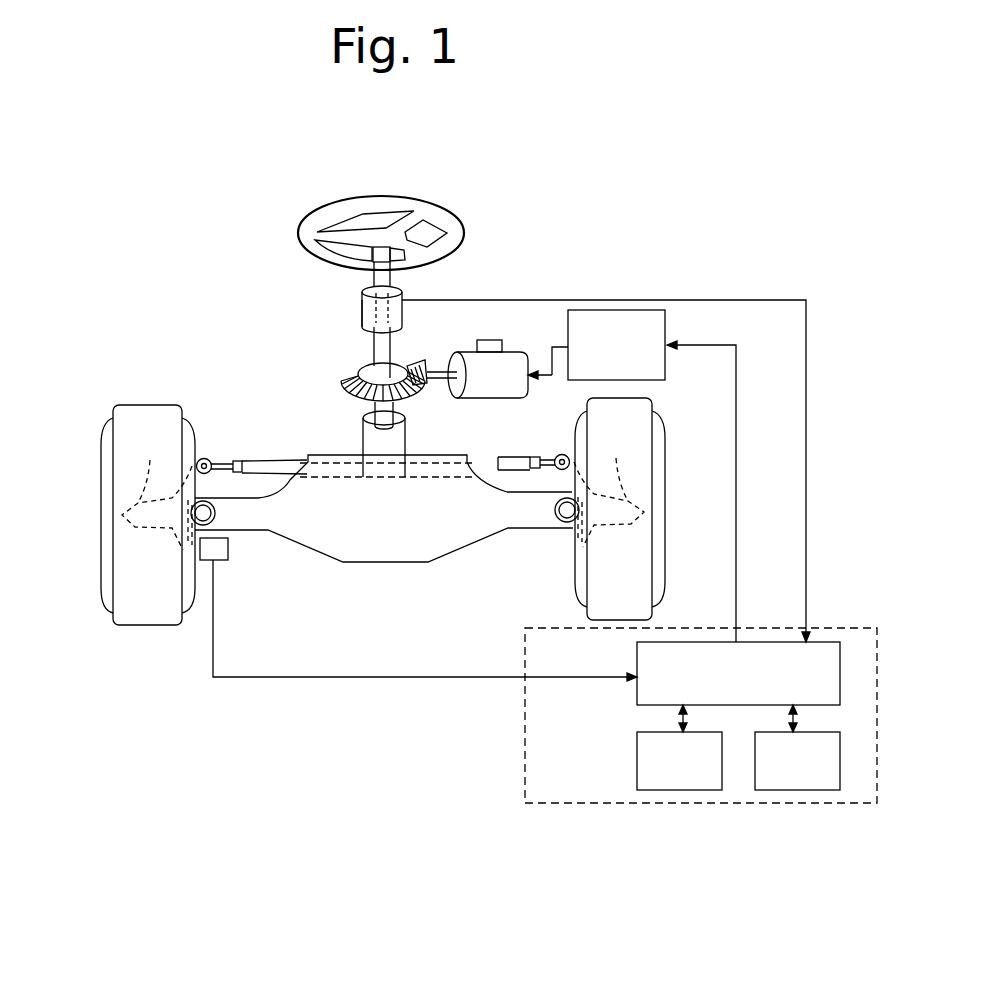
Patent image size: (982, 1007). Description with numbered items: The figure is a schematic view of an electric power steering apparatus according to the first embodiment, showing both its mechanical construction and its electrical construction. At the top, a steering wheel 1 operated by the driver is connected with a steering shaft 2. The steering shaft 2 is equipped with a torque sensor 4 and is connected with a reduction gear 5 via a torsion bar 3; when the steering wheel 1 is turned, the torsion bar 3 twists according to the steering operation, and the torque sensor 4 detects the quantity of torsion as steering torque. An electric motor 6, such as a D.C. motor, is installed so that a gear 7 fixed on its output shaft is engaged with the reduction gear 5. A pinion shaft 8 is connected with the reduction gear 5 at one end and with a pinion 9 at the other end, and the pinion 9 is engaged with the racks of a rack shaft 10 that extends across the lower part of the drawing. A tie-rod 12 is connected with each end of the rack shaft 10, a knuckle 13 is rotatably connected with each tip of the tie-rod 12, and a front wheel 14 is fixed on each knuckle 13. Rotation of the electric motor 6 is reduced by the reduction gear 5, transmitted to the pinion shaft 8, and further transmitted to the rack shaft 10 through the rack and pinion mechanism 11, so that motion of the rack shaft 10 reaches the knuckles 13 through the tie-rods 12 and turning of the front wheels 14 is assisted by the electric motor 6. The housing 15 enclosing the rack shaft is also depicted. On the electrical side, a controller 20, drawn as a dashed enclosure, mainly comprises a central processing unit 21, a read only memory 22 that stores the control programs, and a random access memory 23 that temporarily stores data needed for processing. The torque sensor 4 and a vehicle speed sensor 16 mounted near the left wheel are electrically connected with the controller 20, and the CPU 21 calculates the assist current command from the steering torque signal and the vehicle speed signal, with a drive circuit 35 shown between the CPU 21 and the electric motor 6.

The steering wheel 1 is at (452, 221).
The steering shaft 2 is at (396, 290).
The torsion bar 3 is at (355, 300).
The torque sensor 4 is at (366, 314).
The reduction gear 5 is at (358, 372).
The electric motor 6 is at (518, 350).
The gear 7 is at (416, 366).
The pinion shaft 8 is at (368, 421).
The pinion 9 is at (407, 437).
The rack shaft 10 is at (428, 480).
The rack and pinion mechanism 11 is at (258, 461).
The tie-rod 12 is at (210, 461).
The knuckle 13 is at (383, 491).
The front wheel 14 is at (102, 471).
The rack housing 15 is at (313, 562).
The vehicle speed sensor 16 is at (228, 550).
The controller 20 is at (855, 626).
The central processing unit (CPU) 21 is at (637, 645).
The read only memory (ROM) 22 is at (828, 790).
The random access memory (RAM) 23 is at (710, 790).
The motor drive circuit 35 is at (667, 328).